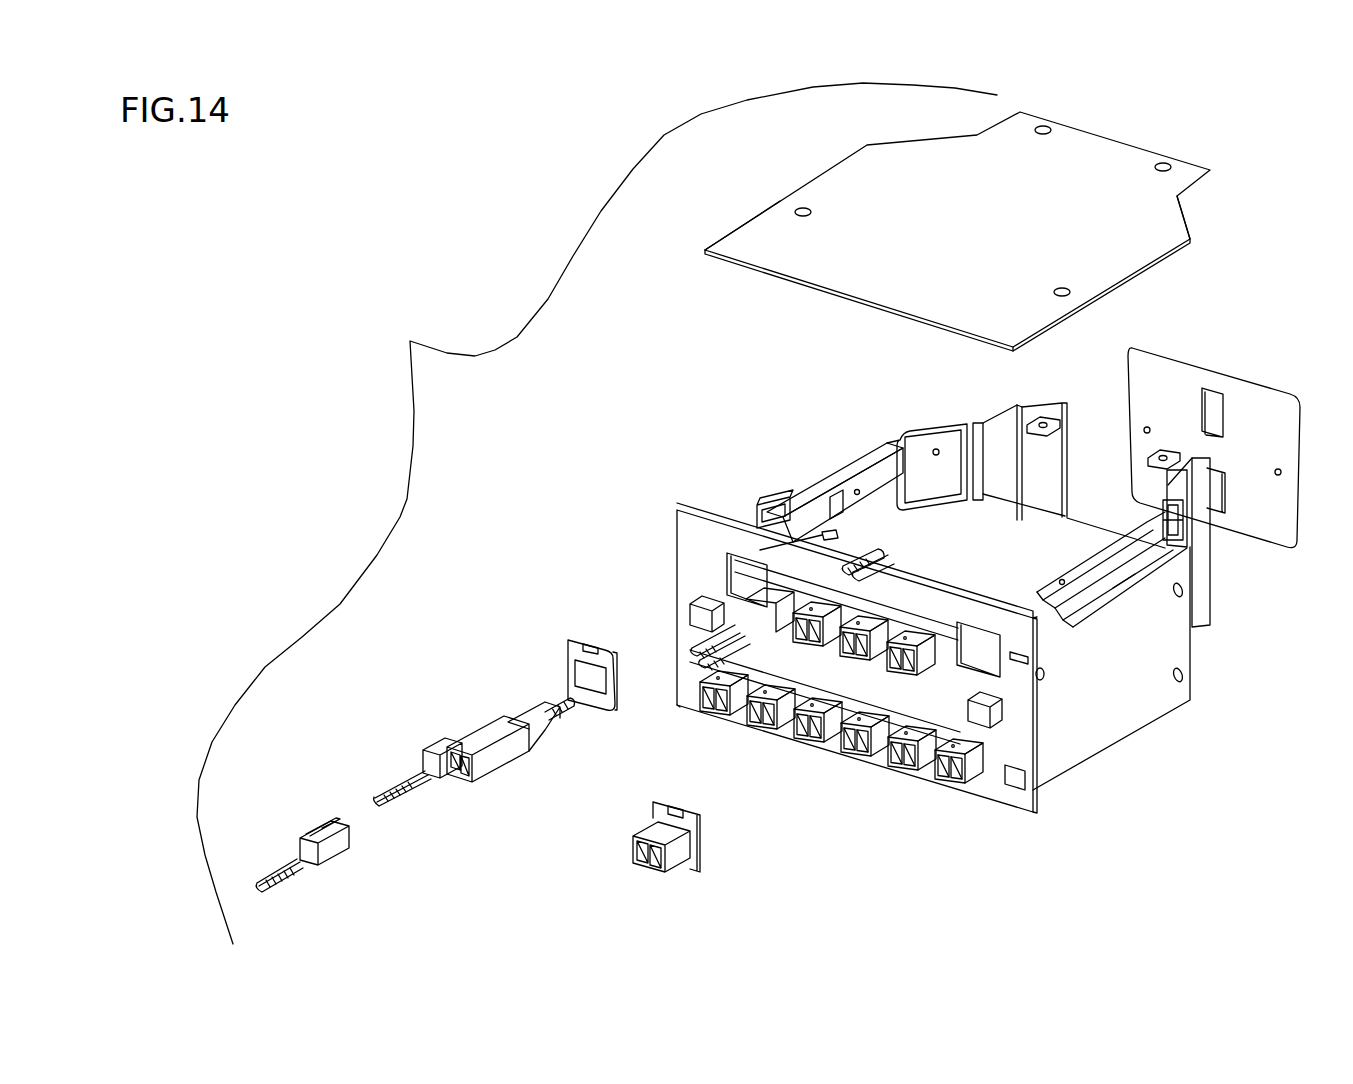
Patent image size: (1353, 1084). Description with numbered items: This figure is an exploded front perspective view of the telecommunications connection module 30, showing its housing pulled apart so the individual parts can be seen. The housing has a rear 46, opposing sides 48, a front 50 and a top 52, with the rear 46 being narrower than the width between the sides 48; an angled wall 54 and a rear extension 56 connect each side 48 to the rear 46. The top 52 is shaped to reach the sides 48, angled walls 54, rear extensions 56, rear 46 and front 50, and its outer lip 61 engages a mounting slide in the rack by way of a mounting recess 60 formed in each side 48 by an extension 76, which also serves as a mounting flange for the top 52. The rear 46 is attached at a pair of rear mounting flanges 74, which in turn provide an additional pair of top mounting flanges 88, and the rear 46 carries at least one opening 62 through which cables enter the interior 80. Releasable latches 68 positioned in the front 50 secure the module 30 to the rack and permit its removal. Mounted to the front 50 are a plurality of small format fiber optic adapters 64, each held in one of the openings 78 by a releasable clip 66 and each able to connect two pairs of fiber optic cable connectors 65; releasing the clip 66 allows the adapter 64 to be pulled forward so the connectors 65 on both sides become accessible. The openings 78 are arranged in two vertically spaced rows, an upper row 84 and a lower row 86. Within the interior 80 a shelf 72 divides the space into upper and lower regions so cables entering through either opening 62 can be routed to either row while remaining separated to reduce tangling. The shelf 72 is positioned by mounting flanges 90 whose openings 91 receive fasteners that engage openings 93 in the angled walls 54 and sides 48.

The module 30 is at (597, 513).
The rear 46 is at (1144, 389).
The opposing sides 48 is at (1099, 664).
The front 50 is at (690, 570).
The top 52 is at (849, 243).
The angled wall 54 is at (927, 430).
The rear extension 56 is at (982, 470).
The mounting recess 60 is at (757, 507).
The outer lip 61 is at (748, 232).
The opening 62 is at (1216, 402).
The adapters 64 is at (478, 728).
The fiber optic cable connectors 65 is at (503, 718).
The releasable clip 66 is at (570, 646).
The releasable latches 68 is at (690, 624).
The shelf 72 is at (962, 563).
The rear mounting flanges 74 is at (1027, 470).
The extension 76 is at (832, 483).
The openings 78 is at (737, 572).
The interior 80 is at (905, 527).
The upper row 84 is at (1007, 657).
The lower row 86 is at (1003, 773).
The top mounting flanges 88 is at (1050, 419).
The mounting flanges 90 is at (957, 467).
The openings 91 is at (935, 455).
The openings 93 is at (1043, 677).